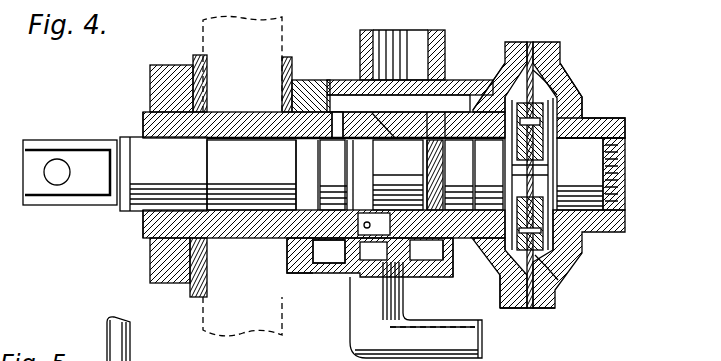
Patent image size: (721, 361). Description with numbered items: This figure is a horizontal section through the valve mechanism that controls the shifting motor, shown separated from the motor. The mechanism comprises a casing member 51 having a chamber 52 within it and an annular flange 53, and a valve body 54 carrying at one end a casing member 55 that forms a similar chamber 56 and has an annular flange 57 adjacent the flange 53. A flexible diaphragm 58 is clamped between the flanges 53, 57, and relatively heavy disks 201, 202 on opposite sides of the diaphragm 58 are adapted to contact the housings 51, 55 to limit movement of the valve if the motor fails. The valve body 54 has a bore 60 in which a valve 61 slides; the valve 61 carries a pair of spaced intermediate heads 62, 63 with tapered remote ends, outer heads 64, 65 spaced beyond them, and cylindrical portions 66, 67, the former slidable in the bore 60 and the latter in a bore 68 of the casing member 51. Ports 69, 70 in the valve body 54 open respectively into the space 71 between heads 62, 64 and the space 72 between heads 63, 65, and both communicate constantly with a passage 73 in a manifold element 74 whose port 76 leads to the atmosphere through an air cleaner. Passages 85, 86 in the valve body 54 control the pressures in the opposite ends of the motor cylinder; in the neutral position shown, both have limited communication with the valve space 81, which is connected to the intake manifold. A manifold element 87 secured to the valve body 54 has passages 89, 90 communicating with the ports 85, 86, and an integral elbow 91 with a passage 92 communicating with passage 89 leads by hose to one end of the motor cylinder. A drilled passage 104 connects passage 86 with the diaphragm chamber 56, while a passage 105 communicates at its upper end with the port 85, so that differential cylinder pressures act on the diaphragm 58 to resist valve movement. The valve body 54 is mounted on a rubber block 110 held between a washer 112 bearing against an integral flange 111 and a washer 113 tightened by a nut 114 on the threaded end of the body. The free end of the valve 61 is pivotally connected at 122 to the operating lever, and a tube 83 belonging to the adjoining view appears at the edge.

The casing member 51 is at (578, 100).
The chamber 52 is at (578, 256).
The annular flange 53 is at (546, 308).
The valve body 54 is at (138, 226).
The casing member 55 is at (488, 84).
The chamber 56 is at (490, 272).
The annular flange 57 is at (510, 42).
The flexible diaphragm 58 is at (545, 78).
The bore 60 is at (230, 137).
The valve 61 is at (163, 174).
The head 62 is at (375, 172).
The head 63 is at (430, 172).
The head 64 is at (290, 158).
The head 65 is at (490, 173).
The cylindrical portion 66 is at (137, 138).
The cylindrical portion 67 is at (627, 158).
The bore 68 is at (592, 118).
The port 69 is at (345, 110).
The port 70 is at (452, 120).
The space 71 is at (329, 251).
The space 72 is at (430, 120).
The passage 73 is at (398, 96).
The manifold element 74 is at (342, 80).
The port 76 is at (410, 31).
The valve space 81 is at (385, 118).
The tube 83 is at (133, 350).
The passage 85 is at (366, 221).
The passage 86 is at (452, 192).
The manifold element 87 is at (420, 277).
The passage 89 is at (362, 278).
The passage 90 is at (453, 268).
The elbow 91 is at (350, 340).
The passage 92 is at (447, 323).
The passage 104 is at (480, 244).
The passage 105 is at (318, 273).
The rubber block 110 is at (282, 32).
The integral flange 111 is at (300, 82).
The washer 112 is at (290, 58).
The washer 113 is at (197, 56).
The nut 114 is at (160, 68).
The pivot pin 122 is at (60, 160).
The disk 201 is at (543, 143).
The disk 202 is at (500, 292).